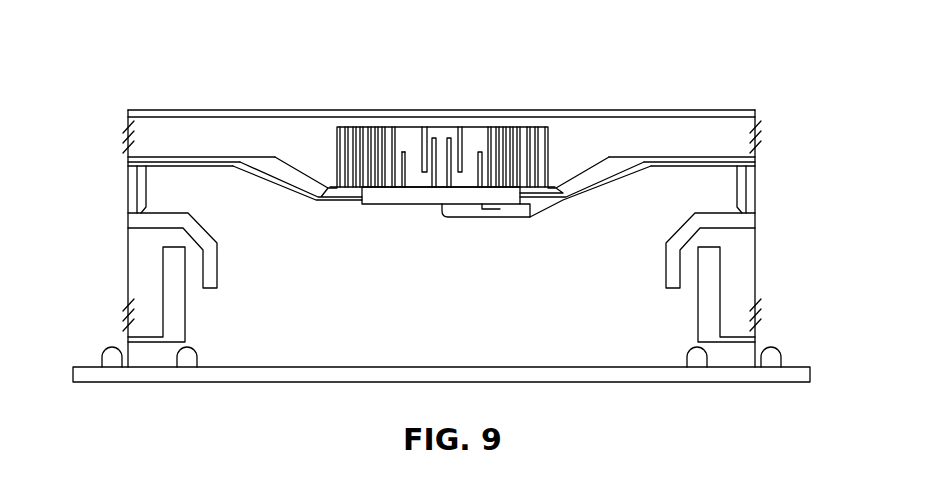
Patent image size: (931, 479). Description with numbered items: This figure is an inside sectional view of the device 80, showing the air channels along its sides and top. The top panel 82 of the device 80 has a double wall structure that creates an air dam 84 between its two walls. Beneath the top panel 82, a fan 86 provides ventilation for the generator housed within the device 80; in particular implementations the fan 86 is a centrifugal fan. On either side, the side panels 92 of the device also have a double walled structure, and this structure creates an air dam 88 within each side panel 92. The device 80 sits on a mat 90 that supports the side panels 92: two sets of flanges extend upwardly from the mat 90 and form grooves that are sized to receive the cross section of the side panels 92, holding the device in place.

The device 80 is at (115, 51).
The top panel 82 is at (758, 118).
The air dam 84 is at (593, 138).
The fan 86 is at (472, 138).
The air dam 88 is at (139, 270).
The mat 90 is at (87, 372).
The side panels 92 is at (757, 280).